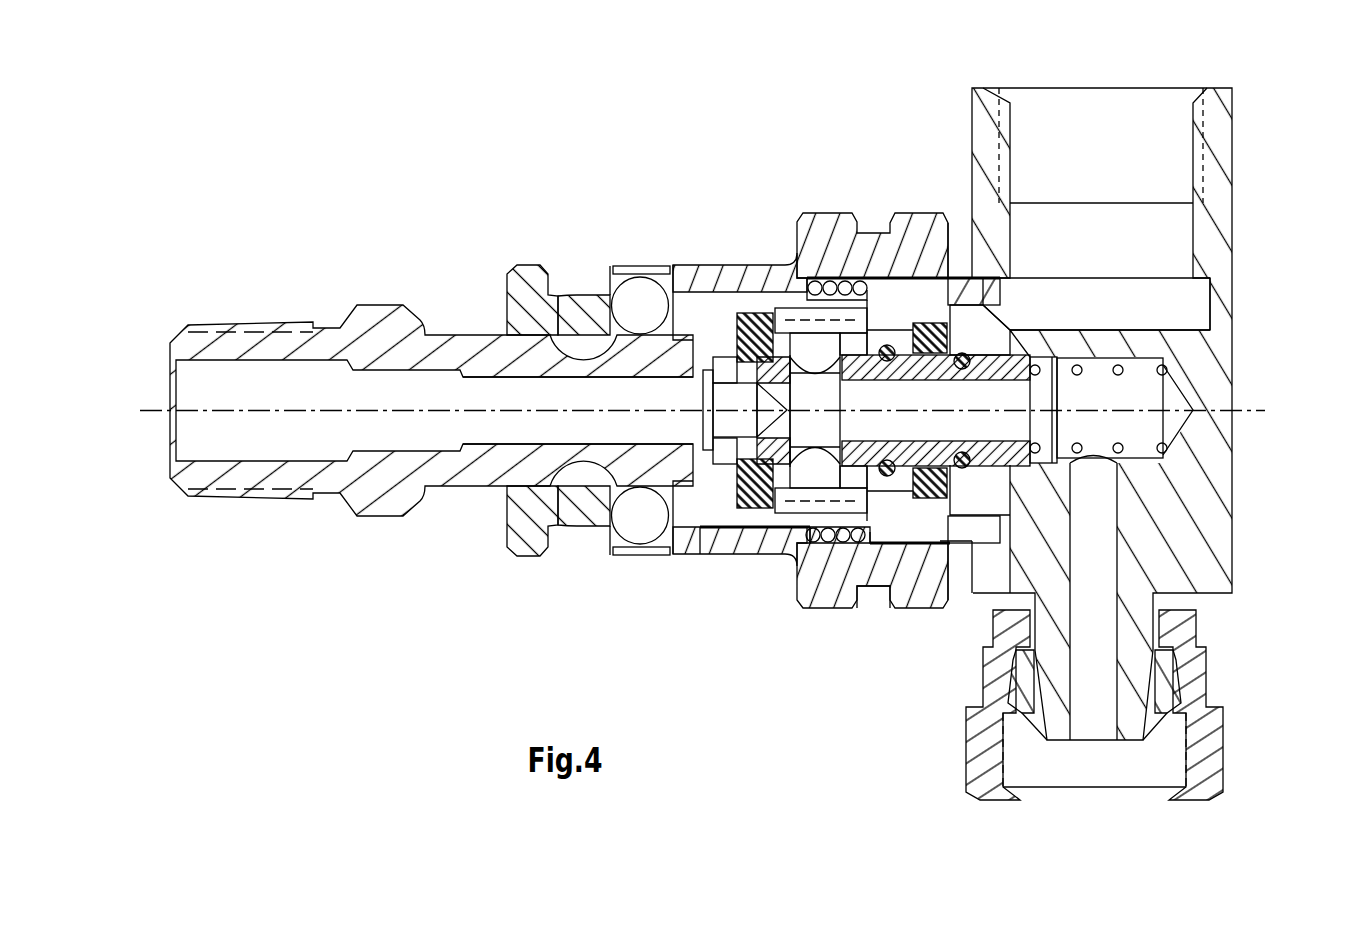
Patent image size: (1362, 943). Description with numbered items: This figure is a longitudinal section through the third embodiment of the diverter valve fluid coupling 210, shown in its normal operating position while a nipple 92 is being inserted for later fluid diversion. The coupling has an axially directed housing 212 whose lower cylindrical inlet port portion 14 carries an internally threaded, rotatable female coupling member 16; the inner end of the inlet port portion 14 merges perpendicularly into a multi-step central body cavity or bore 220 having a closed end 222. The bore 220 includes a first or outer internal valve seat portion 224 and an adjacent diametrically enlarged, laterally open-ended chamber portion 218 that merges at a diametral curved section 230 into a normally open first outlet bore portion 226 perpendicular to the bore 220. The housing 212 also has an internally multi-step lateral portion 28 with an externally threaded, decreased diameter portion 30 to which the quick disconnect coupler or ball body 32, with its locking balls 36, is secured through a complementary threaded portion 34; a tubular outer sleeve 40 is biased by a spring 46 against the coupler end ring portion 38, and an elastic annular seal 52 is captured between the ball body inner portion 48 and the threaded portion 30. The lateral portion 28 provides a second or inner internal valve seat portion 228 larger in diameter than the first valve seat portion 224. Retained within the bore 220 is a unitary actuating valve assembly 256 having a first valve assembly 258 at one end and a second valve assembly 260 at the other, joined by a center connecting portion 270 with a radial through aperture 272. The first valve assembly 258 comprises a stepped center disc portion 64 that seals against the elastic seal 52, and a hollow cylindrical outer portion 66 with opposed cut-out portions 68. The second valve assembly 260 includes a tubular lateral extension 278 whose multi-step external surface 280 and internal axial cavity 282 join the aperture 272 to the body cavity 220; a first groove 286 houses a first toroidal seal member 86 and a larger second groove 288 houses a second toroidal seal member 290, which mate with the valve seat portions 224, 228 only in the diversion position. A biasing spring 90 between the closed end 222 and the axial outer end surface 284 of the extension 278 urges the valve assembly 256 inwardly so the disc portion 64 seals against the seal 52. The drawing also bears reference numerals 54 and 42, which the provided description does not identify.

The diverter valve fluid coupling 210 is at (647, 126).
The nipple 92 is at (378, 304).
The central bore 54 is at (532, 405).
The coupler end ring portion 38 is at (525, 261).
The quick disconnect coupler or ball body 32 is at (572, 300).
The locking balls 36 is at (641, 288).
The tubular outer sleeve 40 is at (706, 258).
The housing hex flange 42 is at (908, 212).
The second valve assembly 260 is at (860, 546).
The second groove 288 is at (863, 280).
The complementary threaded portion 34 is at (815, 308).
The decreased diameter portion 30 is at (790, 306).
The first valve assembly 258 is at (775, 462).
The multi-step external surface 280 is at (830, 548).
The radial through aperture 272 is at (812, 442).
The unitary actuating valve assembly 256 is at (852, 341).
The center disc portion 64 is at (808, 380).
The center connecting portion 270 is at (800, 468).
The cut-out portions 68 is at (703, 412).
The outer portion 66 is at (700, 345).
The elastic annular seal 52 is at (752, 312).
The ball body inner portion 48 is at (750, 505).
The second internal valve seat portion 228 is at (920, 328).
The tubular lateral extension 278 is at (915, 470).
The internal axially-directed cavity 282 is at (895, 381).
The first groove 286 is at (997, 470).
The second toroidal seal member 290 is at (885, 477).
The lateral portion 28 is at (778, 527).
The spring 46 is at (850, 604).
The chamber portion 218 is at (973, 315).
The diametral curved section 230 is at (990, 336).
The first toroidal seal member 86 is at (972, 522).
The housing 212 is at (1238, 505).
The first outlet bore portion 226 is at (1220, 132).
The axial outer end surface 284 is at (1024, 338).
The first internal valve seat portion 224 is at (1212, 278).
The central body cavity or bore 220 is at (1150, 398).
The biasing spring 90 is at (1180, 366).
The closed end 222 is at (1183, 428).
The inlet port portion 14 is at (1050, 706).
The female coupling member 16 is at (1207, 748).